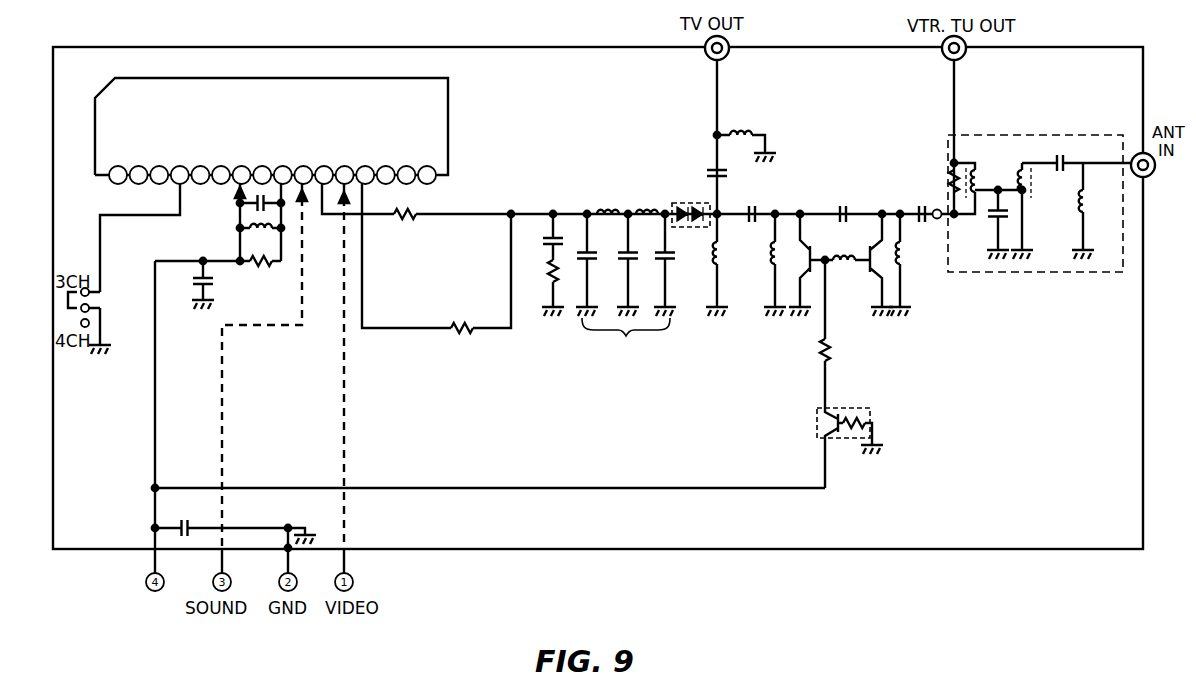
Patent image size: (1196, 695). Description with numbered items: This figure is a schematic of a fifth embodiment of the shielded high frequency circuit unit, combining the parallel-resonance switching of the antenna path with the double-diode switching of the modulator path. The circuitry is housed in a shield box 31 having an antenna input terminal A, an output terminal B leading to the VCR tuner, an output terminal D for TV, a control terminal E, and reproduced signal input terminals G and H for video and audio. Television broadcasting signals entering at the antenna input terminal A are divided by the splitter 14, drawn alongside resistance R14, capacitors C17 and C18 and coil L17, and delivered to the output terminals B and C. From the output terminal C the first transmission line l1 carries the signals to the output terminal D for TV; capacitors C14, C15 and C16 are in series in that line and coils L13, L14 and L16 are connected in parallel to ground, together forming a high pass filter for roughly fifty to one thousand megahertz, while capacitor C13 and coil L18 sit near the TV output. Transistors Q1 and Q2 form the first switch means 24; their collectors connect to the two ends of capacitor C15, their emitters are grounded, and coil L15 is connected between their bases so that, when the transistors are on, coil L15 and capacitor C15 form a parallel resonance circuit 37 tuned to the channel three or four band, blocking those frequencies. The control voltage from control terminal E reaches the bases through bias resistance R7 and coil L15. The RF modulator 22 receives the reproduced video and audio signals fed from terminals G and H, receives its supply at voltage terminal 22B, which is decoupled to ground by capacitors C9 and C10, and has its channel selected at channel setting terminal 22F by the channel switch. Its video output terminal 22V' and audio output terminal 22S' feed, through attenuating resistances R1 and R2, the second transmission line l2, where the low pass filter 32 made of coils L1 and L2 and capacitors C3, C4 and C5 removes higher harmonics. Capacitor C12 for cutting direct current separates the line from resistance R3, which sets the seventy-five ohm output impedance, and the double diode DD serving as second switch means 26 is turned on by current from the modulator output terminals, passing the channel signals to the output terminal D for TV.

The RF modulator 22 is at (448, 102).
The channel setting terminal 22F is at (179, 165).
The voltage terminal 22B is at (242, 165).
The audio output terminal 22S' is at (331, 147).
The video output terminal 22V' is at (391, 147).
The splitter 14 is at (1010, 135).
The shield box 31 is at (1143, 445).
The low pass filter 32 is at (626, 340).
The second switch means 26 is at (700, 228).
The first switch means 24 is at (806, 268).
The parallel resonance circuit 37 is at (860, 212).
The double diode DD is at (676, 202).
The resistance for attenuation R1 is at (415, 210).
The resistance for attenuation R2 is at (462, 332).
The resistance for setting output impedance R3 is at (548, 272).
The bias resistance R7 is at (838, 360).
The resistance R14 is at (950, 180).
The capacitor C3 is at (590, 258).
The capacitor C4 is at (631, 258).
The capacitor C5 is at (668, 258).
The capacitor for high frequency attenuation C9 is at (213, 282).
The capacitor for high frequency attenuation C10 is at (195, 512).
The capacitor for cutting direct current C12 is at (545, 240).
The capacitor C13 is at (729, 173).
The capacitor C14 is at (748, 196).
The capacitor C15 is at (843, 206).
The capacitor C16 is at (922, 206).
The capacitor C17 is at (993, 220).
The capacitor C18 is at (1057, 155).
The coil L1 is at (608, 210).
The coil L2 is at (648, 210).
The coil L13 is at (719, 258).
The coil L14 is at (774, 268).
The coil L15 is at (845, 265).
The coil L16 is at (902, 250).
The coil L17 is at (1092, 200).
The coil L18 is at (745, 134).
The transistor Q1 is at (868, 250).
The transistor Q2 is at (815, 250).
The first transmission line l1 is at (810, 212).
The second transmission line l2 is at (577, 212).
The antenna input terminal A is at (1151, 174).
The output terminal B is at (942, 45).
The output terminal C is at (936, 219).
The output terminal for TV D is at (730, 45).
The control terminal E is at (152, 590).
The reproduced signal input terminal G is at (353, 586).
The reproduced signal input terminal H is at (231, 586).